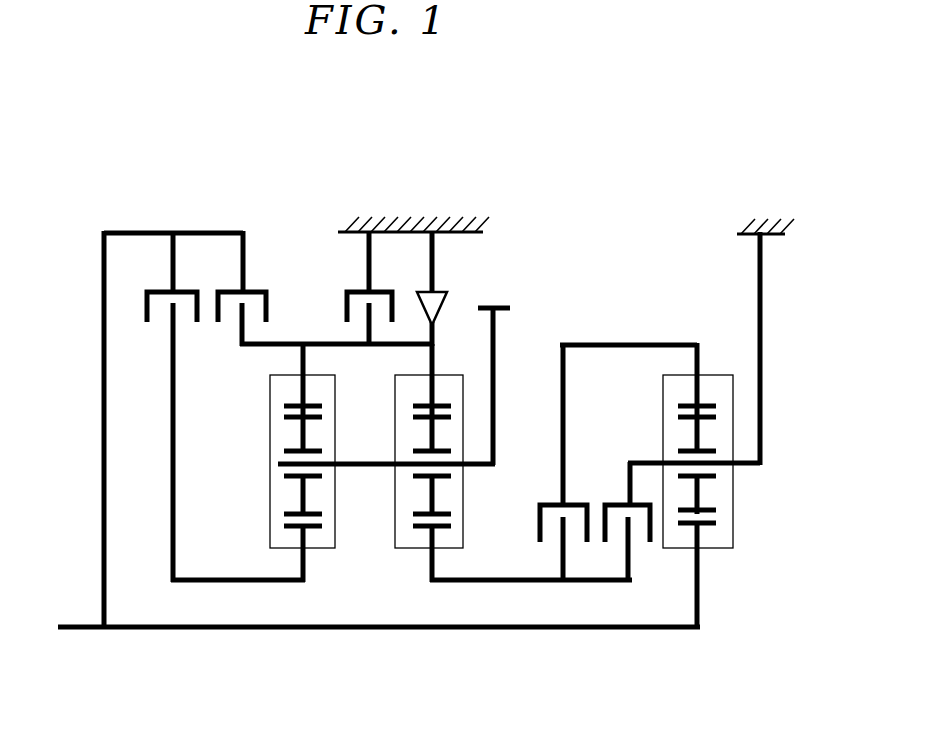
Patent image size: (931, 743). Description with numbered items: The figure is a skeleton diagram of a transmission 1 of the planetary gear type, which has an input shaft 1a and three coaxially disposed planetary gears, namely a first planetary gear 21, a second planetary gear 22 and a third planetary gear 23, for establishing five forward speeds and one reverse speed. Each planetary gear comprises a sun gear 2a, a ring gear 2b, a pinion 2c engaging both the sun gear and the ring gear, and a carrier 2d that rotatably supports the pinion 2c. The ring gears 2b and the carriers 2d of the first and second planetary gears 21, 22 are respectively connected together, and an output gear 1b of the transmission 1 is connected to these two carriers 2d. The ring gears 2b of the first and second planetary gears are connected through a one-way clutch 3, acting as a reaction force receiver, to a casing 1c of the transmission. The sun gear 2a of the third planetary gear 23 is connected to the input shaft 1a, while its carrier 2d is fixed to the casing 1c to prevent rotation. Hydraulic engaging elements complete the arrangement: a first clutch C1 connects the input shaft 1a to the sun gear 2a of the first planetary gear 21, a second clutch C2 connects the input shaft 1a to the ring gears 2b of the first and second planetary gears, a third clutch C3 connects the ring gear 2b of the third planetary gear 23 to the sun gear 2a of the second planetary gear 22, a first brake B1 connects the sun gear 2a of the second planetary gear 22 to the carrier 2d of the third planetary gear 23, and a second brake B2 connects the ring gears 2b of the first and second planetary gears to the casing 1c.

The transmission 1 is at (110, 225).
The input shaft 1a is at (141, 630).
The output gear 1b is at (510, 307).
The casing 1c is at (432, 226).
The sun gear 2a is at (300, 530).
The ring gear 2b is at (292, 406).
The pinion 2c is at (298, 490).
The carrier 2d is at (355, 462).
The first planetary gear 21 is at (340, 535).
The second planetary gear 22 is at (480, 535).
The third planetary gear 23 is at (733, 384).
The one-way clutch 3 is at (445, 306).
The first brake B1 is at (616, 505).
The second brake B2 is at (347, 308).
The first clutch C1 is at (148, 305).
The second clutch C2 is at (266, 305).
The third clutch C3 is at (548, 505).